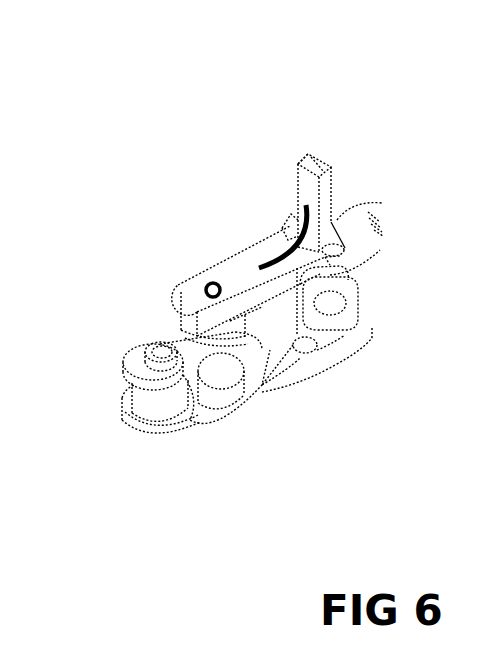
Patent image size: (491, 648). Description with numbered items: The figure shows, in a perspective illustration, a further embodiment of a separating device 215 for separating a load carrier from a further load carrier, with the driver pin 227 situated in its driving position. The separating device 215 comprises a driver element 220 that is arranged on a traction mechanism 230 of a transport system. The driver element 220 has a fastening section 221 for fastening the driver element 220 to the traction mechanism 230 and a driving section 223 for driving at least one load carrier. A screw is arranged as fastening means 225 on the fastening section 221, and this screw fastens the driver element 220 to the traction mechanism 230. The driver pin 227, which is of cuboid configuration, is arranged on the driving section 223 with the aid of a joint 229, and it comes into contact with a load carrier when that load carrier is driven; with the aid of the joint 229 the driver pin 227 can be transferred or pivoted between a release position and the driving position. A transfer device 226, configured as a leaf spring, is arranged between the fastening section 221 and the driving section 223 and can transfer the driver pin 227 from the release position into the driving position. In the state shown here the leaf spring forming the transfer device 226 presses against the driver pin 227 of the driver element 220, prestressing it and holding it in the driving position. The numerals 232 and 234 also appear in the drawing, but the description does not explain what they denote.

The separating device 215 is at (194, 86).
The driver element 220 is at (226, 257).
The fastening section 221 is at (257, 301).
The driving section 223 is at (338, 162).
The fastening means 225 is at (206, 289).
The transfer device 226 is at (278, 251).
The driver pin 227 is at (303, 177).
The joint 229 is at (343, 250).
The traction mechanism 230 is at (342, 317).
The link plate 232 is at (287, 352).
The pin 234 is at (190, 347).